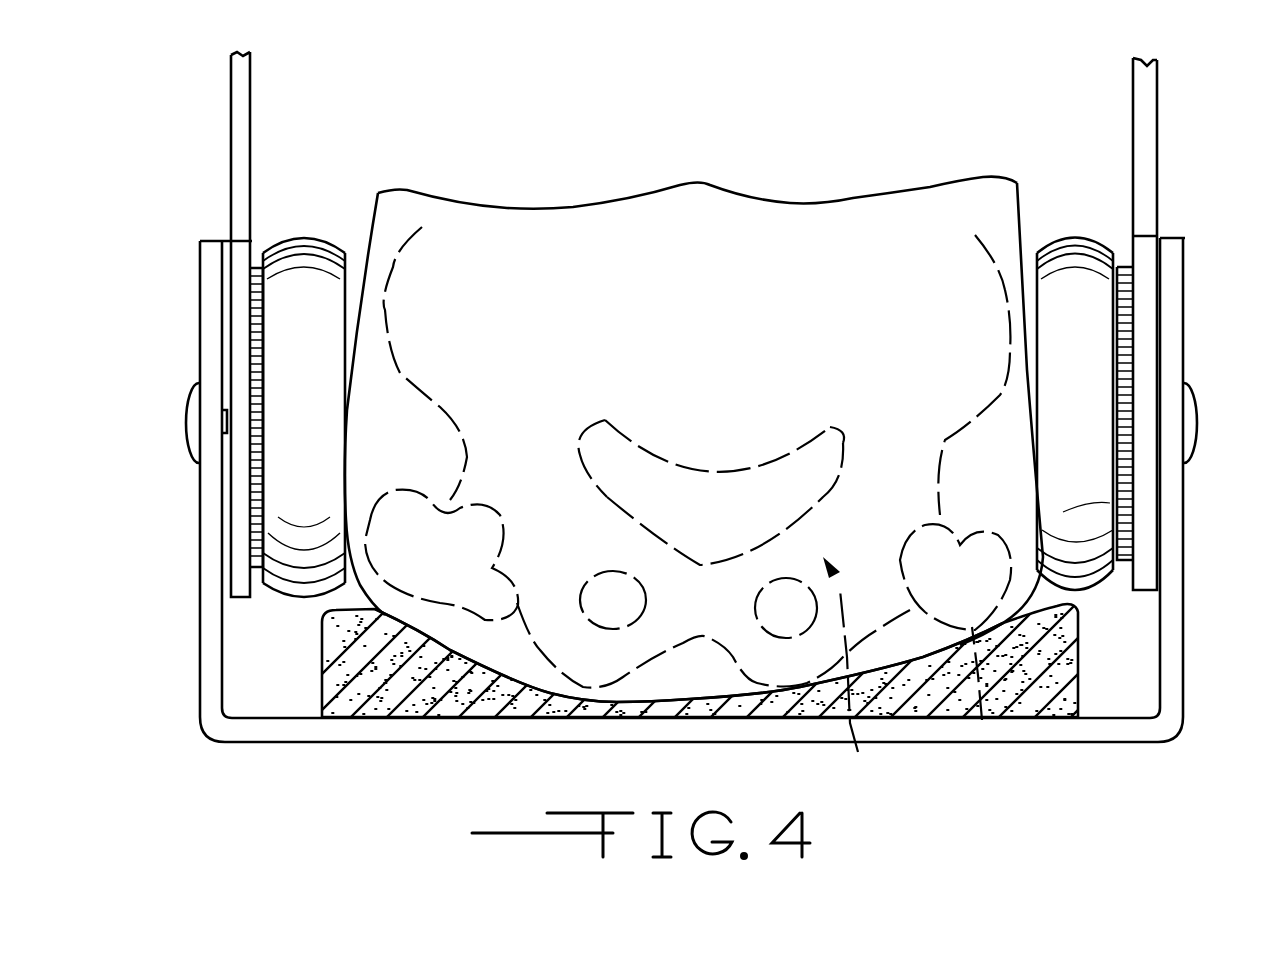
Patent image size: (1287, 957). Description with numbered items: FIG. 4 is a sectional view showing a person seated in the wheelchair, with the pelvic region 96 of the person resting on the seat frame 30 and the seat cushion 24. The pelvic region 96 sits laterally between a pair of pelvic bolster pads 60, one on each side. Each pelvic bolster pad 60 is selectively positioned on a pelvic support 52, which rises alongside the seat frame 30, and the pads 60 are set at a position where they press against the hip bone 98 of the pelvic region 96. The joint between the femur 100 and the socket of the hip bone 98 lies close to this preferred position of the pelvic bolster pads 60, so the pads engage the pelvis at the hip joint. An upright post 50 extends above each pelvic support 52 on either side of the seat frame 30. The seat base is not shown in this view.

The seat cushion 24 is at (463, 712).
The seat frame 30 is at (347, 733).
The upright post 50 is at (243, 104).
The pelvic support 52 is at (237, 320).
The pelvic bolster pad 60 is at (305, 240).
The pelvic region 96 is at (712, 250).
The hip bone 98 is at (868, 768).
The femur 100 is at (372, 575).